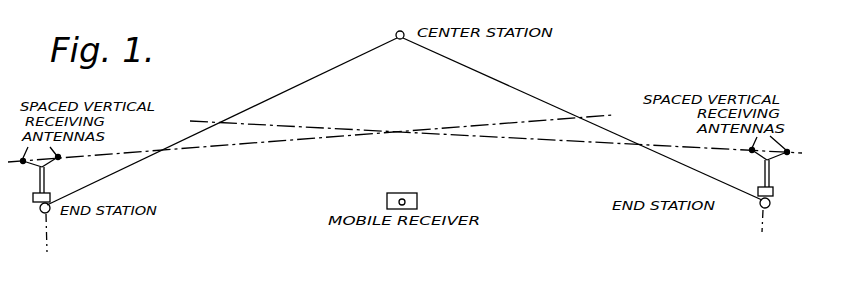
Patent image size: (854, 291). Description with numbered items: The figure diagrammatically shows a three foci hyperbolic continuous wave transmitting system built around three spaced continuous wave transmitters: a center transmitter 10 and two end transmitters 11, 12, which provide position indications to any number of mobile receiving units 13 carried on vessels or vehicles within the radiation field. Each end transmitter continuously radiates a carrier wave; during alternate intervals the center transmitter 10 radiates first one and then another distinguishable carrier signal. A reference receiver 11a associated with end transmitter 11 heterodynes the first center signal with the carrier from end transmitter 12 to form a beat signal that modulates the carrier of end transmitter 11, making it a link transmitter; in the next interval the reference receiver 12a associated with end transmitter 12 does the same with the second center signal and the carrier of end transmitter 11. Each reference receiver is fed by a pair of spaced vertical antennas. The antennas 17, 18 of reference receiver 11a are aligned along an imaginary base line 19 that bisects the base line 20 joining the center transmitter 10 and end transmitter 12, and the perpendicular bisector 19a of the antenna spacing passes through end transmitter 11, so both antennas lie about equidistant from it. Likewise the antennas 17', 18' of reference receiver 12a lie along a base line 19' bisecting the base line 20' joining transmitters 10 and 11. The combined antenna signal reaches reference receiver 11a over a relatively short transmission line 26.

The center transmitter 10 is at (396, 33).
The end transmitter 11 is at (47, 213).
The reference receiver 11a is at (34, 198).
The end transmitter 12 is at (769, 207).
The reference receiver 12a is at (760, 189).
The mobile receiving unit 13 is at (388, 196).
The vertical antenna 17 is at (26, 176).
The vertical antenna 17' is at (731, 159).
The vertical antenna 18 is at (74, 164).
The vertical antenna 18' is at (786, 170).
The base line 19 is at (310, 141).
The base line 19' is at (496, 124).
The perpendicular bisector 19a is at (43, 232).
The base line 20 is at (582, 119).
The base line 20' is at (222, 121).
The transmission line 26 is at (45, 180).